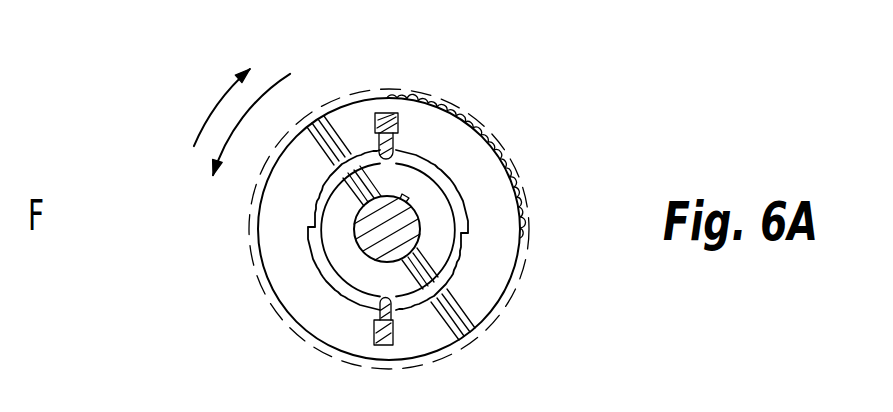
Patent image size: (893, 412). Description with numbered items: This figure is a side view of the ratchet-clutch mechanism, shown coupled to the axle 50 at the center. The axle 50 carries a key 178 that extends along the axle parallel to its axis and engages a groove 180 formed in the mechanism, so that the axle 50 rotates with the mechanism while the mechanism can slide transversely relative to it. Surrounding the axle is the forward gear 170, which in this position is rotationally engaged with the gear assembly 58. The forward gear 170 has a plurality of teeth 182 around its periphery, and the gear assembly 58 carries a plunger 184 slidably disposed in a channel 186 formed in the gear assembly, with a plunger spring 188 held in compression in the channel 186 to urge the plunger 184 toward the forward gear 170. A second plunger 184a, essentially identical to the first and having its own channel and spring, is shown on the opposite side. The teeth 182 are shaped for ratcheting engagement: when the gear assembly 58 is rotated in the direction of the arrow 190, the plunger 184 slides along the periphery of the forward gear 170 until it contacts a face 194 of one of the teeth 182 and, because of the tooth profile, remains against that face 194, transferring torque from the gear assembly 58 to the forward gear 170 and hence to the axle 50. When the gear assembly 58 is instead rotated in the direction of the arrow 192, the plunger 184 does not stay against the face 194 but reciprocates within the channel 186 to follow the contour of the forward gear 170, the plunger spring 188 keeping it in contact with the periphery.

The axle 50 is at (410, 292).
The gear assembly 58 is at (457, 132).
The forward gear 170 is at (354, 231).
The key 178 is at (415, 210).
The groove 180 is at (405, 198).
The teeth 182 is at (312, 228).
The plunger 184 is at (443, 79).
The second plunger 184a is at (398, 322).
The channel 186 is at (398, 112).
The plunger spring 188 is at (377, 112).
The arrow 190 is at (293, 72).
The arrow 192 is at (232, 84).
The face 194 is at (358, 153).